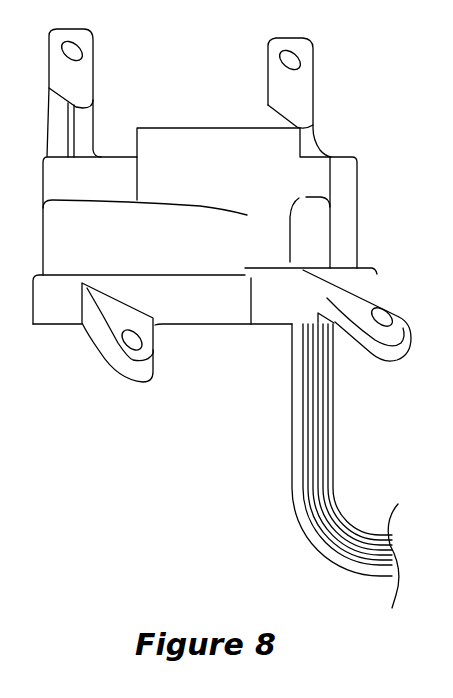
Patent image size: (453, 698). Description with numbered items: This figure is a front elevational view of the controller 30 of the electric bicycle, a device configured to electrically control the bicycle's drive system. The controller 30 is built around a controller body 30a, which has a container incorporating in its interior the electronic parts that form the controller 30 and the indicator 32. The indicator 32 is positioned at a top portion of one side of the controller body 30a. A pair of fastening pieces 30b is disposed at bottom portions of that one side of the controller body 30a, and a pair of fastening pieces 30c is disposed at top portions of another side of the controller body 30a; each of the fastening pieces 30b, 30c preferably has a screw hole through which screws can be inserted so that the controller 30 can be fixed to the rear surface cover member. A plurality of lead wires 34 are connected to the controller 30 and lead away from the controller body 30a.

The controller 30 is at (230, 318).
The controller body 30a is at (206, 315).
The fastening pieces 30b is at (133, 372).
The fastening pieces 30c is at (85, 49).
The indicator 32 is at (211, 135).
The lead wires 34 is at (332, 437).